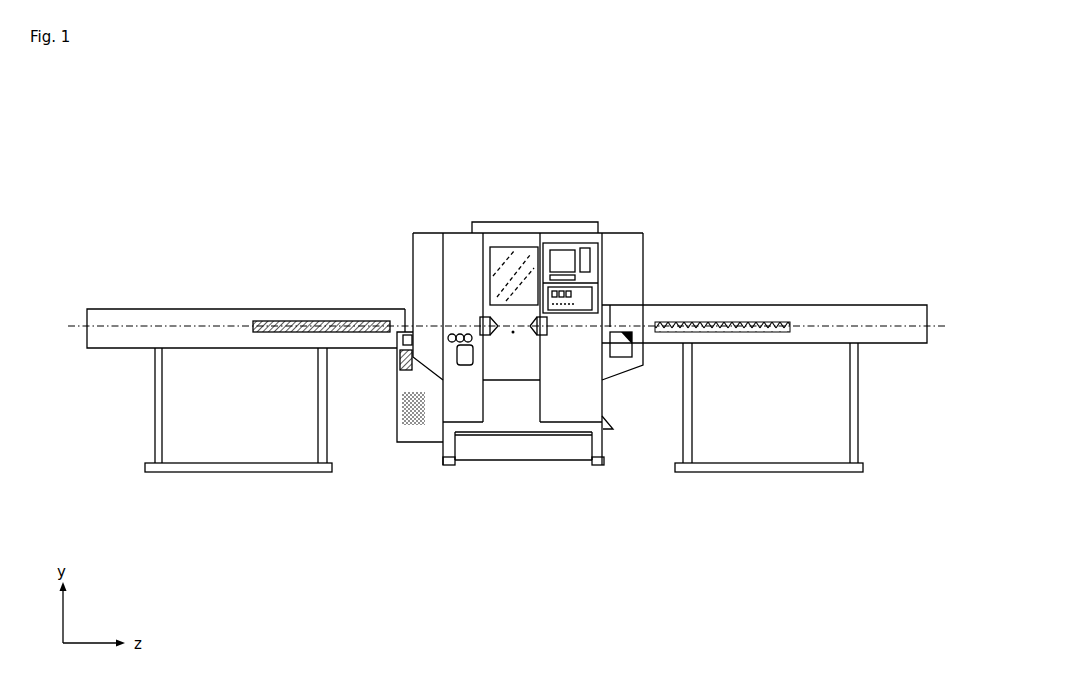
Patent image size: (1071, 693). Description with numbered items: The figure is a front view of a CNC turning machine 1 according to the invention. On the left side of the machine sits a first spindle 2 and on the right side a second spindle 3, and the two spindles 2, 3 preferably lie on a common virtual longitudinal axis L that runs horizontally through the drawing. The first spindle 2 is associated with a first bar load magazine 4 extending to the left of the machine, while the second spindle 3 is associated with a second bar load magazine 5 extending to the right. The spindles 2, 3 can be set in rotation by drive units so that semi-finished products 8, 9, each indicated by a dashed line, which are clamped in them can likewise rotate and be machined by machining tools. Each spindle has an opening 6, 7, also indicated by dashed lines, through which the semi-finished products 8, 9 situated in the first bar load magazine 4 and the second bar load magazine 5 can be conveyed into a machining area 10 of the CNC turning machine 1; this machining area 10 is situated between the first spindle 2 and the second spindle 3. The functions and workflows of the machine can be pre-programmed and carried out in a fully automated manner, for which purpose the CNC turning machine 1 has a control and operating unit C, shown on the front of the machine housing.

The CNC turning machine 1 is at (636, 158).
The first spindle 2 is at (476, 305).
The second spindle 3 is at (545, 350).
The first bar load magazine 4 is at (220, 283).
The second bar load magazine 5 is at (820, 287).
The opening 6 is at (440, 320).
The opening 7 is at (597, 318).
The semi-finished product 8 is at (323, 327).
The semi-finished product 9 is at (693, 327).
The machining area 10 is at (515, 338).
The control and operating unit C is at (591, 280).
The common virtual longitudinal axis L is at (499, 328).